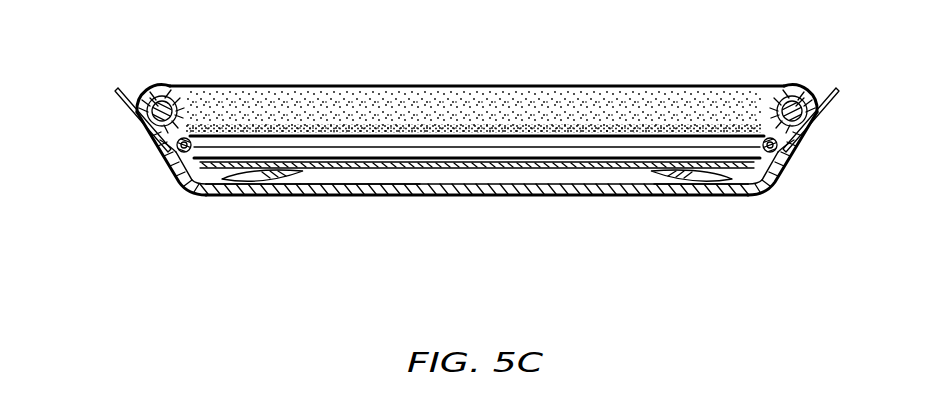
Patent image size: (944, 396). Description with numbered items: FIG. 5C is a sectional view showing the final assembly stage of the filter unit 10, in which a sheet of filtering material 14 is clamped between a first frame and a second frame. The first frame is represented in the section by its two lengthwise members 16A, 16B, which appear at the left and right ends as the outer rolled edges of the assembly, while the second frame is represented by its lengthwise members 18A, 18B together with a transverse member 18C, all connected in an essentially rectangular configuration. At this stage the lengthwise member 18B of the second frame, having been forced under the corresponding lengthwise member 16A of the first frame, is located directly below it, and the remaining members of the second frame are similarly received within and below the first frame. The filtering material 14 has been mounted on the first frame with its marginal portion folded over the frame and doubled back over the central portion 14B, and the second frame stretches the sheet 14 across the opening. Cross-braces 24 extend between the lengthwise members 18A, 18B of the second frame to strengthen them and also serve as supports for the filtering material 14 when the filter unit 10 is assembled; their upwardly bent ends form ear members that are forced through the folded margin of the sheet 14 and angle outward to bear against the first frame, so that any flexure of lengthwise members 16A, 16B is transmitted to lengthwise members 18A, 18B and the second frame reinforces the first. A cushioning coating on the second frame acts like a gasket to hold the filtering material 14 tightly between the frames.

The filter unit 10 is at (470, 78).
The sheet of filtering material 14 is at (603, 205).
The central portion 14B is at (324, 197).
The lengthwise member 16A is at (156, 100).
The lengthwise member 16B is at (787, 113).
The lengthwise member 18A is at (772, 184).
The lengthwise member 18B is at (183, 190).
The transverse member 18C is at (596, 148).
The cross-braces 24 is at (528, 172).